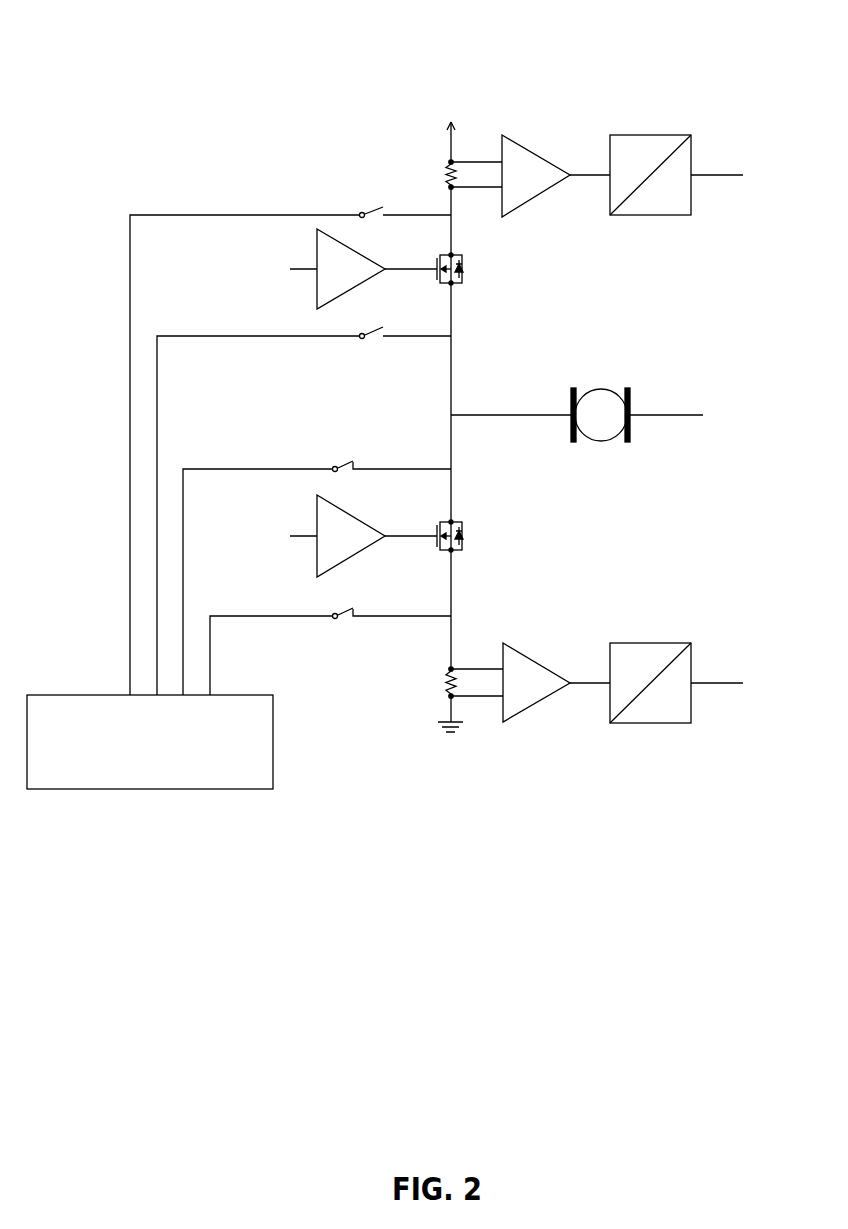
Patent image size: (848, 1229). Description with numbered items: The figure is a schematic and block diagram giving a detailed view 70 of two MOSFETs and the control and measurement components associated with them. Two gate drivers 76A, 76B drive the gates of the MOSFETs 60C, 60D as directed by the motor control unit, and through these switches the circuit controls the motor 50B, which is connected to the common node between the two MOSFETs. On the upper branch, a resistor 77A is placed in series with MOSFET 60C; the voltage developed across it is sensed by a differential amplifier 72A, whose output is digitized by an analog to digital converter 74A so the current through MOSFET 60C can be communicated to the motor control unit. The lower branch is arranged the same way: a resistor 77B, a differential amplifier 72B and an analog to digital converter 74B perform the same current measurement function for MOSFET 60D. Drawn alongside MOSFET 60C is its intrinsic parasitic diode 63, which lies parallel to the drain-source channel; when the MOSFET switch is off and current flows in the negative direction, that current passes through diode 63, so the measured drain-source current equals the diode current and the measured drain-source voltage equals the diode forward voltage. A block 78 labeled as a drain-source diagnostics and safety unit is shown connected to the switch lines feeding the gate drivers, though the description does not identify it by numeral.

The detailed view 70 is at (130, 65).
The differential amplifier 72A is at (517, 142).
The analog to digital converter 74A is at (657, 133).
The resistor 77A is at (437, 177).
The gate driver 76A is at (307, 283).
The intrinsic parasitic diode 63 is at (471, 268).
The MOSFET 60C is at (461, 291).
The motor 50B is at (603, 445).
The gate driver 76B is at (302, 553).
The MOSFET 60D is at (473, 547).
The resistor 77B is at (437, 682).
The differential amplifier 72B is at (508, 727).
The analog to digital converter 74B is at (642, 727).
The SCD-ADC drain-source diagnostics and safety unit 78 is at (172, 793).